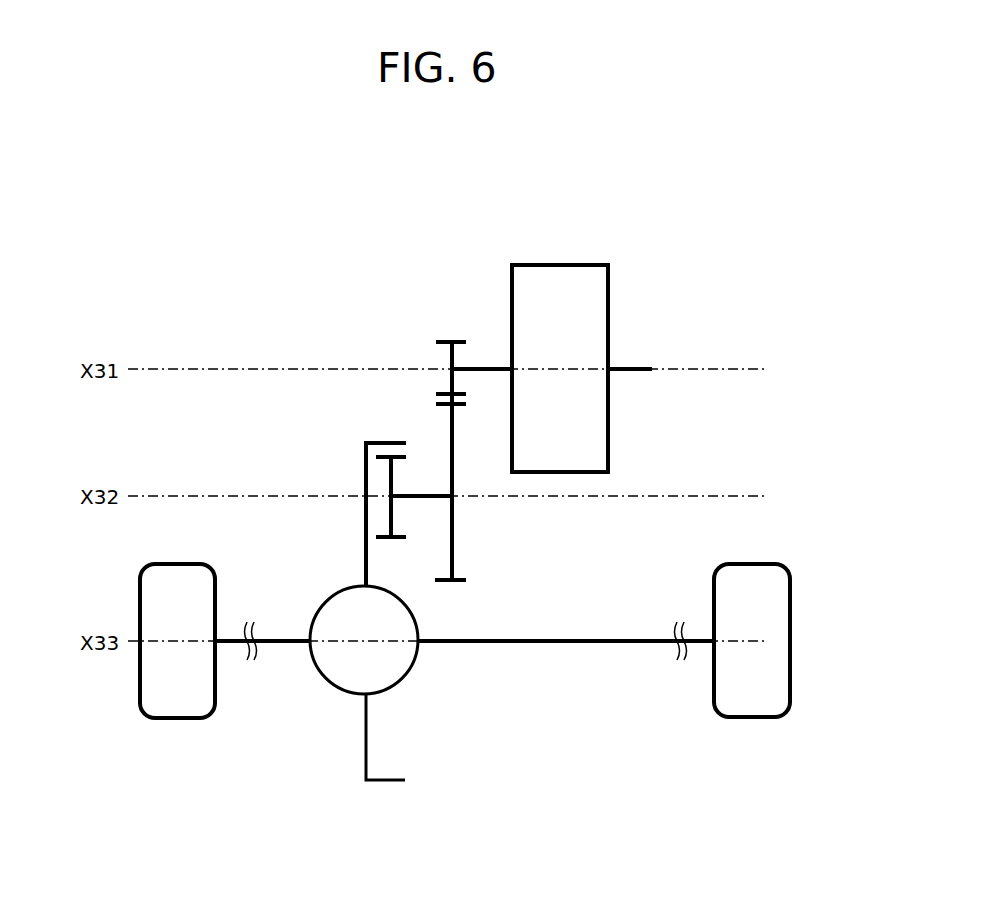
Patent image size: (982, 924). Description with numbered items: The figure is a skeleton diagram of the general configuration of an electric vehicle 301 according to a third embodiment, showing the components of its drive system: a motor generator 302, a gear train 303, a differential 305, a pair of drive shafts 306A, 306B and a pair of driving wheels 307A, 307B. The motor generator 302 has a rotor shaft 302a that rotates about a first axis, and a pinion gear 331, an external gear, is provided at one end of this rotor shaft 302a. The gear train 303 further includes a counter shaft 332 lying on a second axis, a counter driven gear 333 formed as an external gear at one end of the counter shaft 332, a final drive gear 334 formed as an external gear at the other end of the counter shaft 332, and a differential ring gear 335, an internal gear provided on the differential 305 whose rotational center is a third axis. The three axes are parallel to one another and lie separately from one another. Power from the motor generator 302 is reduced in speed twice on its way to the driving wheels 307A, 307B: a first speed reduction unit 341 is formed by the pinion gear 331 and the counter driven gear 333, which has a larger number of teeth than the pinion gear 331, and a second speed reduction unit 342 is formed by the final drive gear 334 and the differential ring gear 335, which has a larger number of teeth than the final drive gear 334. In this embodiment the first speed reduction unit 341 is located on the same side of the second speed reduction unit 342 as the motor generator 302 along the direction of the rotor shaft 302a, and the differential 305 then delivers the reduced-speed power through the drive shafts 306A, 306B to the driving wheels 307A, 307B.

The electric vehicle 301 is at (547, 216).
The motor generator 302 is at (608, 300).
The rotor shaft 302a is at (494, 367).
The gear train 303 is at (370, 269).
The differential 305 is at (326, 606).
The drive shaft 306A is at (595, 645).
The drive shaft 306B is at (275, 645).
The driving wheel 307A is at (748, 720).
The driving wheel 307B is at (165, 720).
The pinion gear 331 is at (452, 340).
The counter shaft 332 is at (426, 499).
The counter driven gear 333 is at (462, 578).
The final drive gear 334 is at (391, 478).
The differential ring gear 335 is at (366, 528).
The first speed reduction unit 341 is at (429, 381).
The second speed reduction unit 342 is at (416, 444).